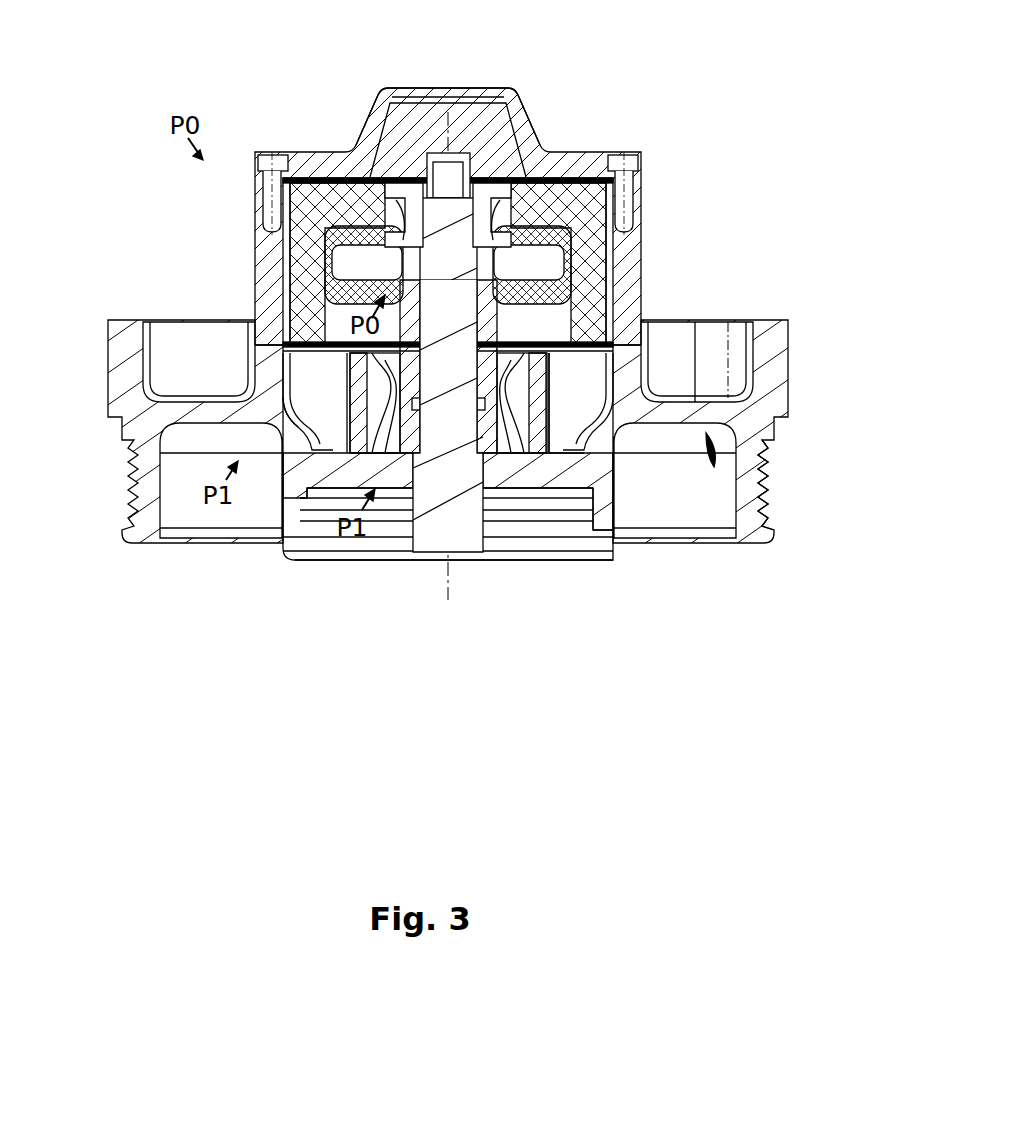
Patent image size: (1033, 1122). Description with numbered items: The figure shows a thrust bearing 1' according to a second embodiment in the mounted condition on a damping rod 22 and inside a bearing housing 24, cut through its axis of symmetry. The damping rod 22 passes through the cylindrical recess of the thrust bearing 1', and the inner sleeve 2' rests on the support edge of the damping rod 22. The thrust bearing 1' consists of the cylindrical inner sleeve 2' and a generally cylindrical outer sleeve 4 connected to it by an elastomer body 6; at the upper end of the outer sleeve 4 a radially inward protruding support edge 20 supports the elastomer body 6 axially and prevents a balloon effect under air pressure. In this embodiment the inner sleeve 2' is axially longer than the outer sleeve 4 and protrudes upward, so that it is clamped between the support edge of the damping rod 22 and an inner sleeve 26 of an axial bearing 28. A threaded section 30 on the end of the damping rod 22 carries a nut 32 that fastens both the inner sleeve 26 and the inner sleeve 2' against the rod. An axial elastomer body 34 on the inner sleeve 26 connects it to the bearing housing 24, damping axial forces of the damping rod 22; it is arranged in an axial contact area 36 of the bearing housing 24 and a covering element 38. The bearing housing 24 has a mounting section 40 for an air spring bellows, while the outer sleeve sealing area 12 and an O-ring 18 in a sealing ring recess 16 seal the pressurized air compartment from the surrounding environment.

The thrust bearing 1' is at (204, 449).
The inner sleeve 2' is at (448, 500).
The outer sleeve 4 is at (570, 440).
The elastomer body 6 is at (525, 430).
The outer sleeve sealing area 12 is at (600, 468).
The sealing ring recess 16 is at (405, 450).
The O-ring 18 is at (335, 492).
The support edge 20 is at (300, 285).
The damping rod 22 is at (463, 560).
The bearing housing 24 is at (257, 347).
The inner sleeve of the axial bearing 26 is at (565, 205).
The axial bearing 28 is at (600, 203).
The threaded section 30 is at (485, 170).
The nut 32 is at (362, 140).
The axial elastomer body 34 is at (603, 270).
The axial contact area 36 is at (633, 342).
The covering element 38 is at (306, 162).
The mounting section 40 is at (763, 487).